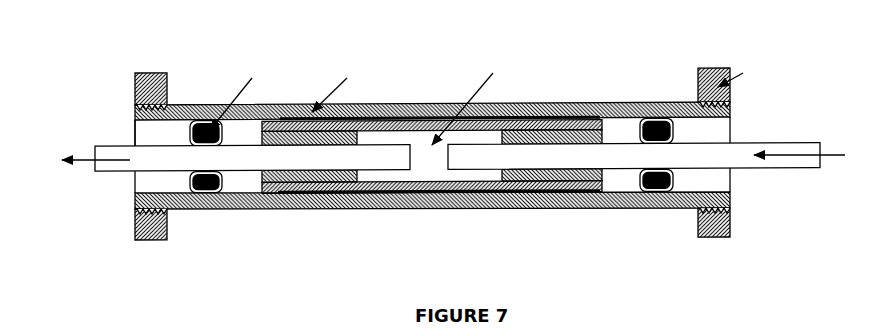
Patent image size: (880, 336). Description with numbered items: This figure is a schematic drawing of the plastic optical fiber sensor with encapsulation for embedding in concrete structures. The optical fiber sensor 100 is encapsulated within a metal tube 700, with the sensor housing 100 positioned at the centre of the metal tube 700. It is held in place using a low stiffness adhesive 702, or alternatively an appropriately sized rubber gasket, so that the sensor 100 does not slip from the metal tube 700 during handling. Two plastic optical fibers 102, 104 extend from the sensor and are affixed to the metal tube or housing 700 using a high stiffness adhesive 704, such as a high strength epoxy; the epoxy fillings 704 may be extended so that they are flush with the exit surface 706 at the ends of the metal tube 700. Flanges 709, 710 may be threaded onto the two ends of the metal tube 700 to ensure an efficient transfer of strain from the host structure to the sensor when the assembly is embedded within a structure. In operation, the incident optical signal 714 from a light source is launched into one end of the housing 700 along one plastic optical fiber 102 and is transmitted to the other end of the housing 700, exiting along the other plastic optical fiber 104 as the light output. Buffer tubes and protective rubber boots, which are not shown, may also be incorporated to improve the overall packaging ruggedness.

The metal tube 700 is at (192, 98).
The low stiffness adhesive 702 is at (432, 112).
The high stiffness adhesive 704 is at (431, 122).
The exit surface 706 is at (135, 126).
The flange 709 is at (160, 72).
The flange 710 is at (710, 68).
The incident optical signal 714 is at (840, 158).
The optical fiber sensor 100 is at (596, 133).
The plastic optical fiber 102 is at (627, 160).
The plastic optical fiber 104 is at (240, 160).